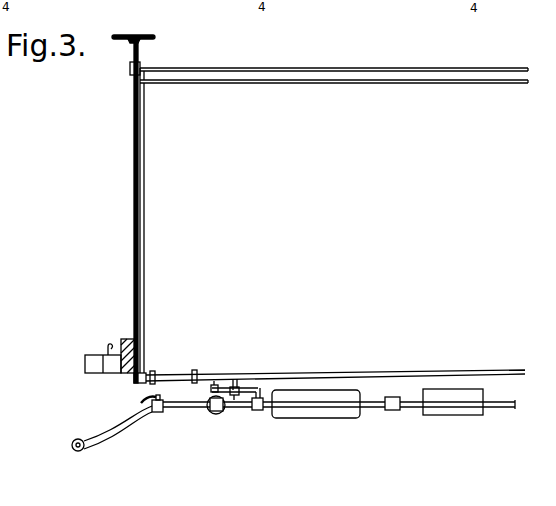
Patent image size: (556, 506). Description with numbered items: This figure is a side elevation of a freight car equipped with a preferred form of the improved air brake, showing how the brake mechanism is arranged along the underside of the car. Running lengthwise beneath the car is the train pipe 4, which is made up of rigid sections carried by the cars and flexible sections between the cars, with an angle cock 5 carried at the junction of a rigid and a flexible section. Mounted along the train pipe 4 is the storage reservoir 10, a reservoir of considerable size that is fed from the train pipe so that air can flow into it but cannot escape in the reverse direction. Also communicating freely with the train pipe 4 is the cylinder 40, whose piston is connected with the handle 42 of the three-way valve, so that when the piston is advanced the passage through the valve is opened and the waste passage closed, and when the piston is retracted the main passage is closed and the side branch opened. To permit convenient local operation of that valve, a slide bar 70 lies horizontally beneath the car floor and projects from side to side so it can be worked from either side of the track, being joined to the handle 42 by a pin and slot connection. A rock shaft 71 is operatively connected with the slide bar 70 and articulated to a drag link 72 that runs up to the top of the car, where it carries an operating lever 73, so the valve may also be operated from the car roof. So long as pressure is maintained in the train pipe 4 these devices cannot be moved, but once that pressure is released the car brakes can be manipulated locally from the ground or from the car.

The train pipe 4 is at (500, 407).
The angle cock 5 is at (158, 413).
The storage reservoir 10 is at (314, 415).
The cylinder 40 is at (217, 415).
The handle 42 is at (247, 389).
The slide bar 70 is at (237, 396).
The rock shaft 71 is at (214, 381).
The drag link 72 is at (134, 210).
The operating lever 73 is at (132, 71).